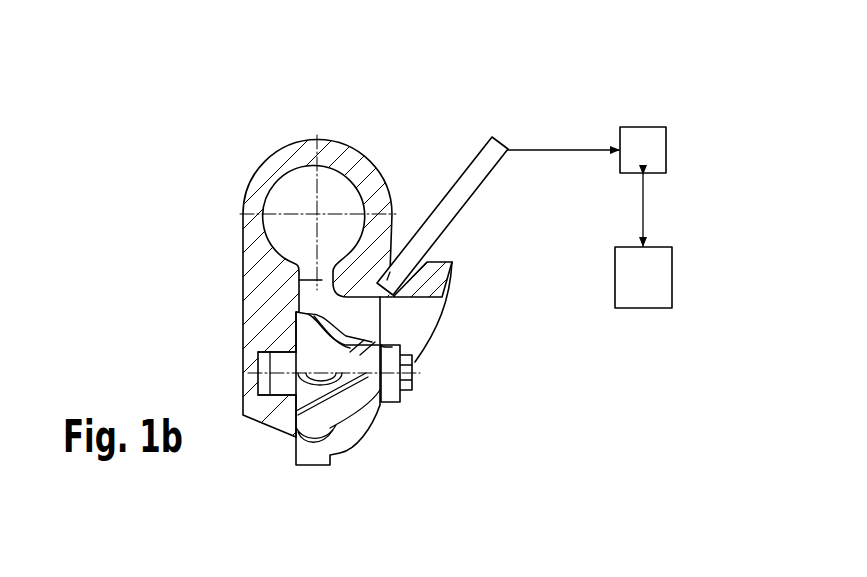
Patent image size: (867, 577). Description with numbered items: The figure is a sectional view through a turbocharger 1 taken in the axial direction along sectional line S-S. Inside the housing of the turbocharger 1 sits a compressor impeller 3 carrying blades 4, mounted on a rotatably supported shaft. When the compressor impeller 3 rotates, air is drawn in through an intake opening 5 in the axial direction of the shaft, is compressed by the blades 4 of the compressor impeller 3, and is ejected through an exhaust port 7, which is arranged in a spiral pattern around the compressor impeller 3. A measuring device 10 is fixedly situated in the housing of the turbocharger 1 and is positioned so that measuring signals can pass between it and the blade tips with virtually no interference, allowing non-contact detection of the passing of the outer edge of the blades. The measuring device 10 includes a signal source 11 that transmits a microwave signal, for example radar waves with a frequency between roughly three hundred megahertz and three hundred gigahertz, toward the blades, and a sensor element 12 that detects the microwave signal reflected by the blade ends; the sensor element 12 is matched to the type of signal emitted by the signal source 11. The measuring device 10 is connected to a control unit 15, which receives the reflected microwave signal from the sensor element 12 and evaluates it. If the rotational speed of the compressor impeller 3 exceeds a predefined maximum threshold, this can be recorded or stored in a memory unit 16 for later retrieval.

The turbocharger 1 is at (298, 124).
The compressor impeller 3 is at (294, 446).
The blades 4 is at (367, 440).
The intake opening 5 is at (412, 320).
The exhaust port 7 is at (290, 190).
The measuring device 10 is at (476, 168).
The signal source 11 is at (387, 278).
The sensor element 12 is at (399, 276).
The control unit 15 is at (636, 135).
The memory unit 16 is at (642, 298).